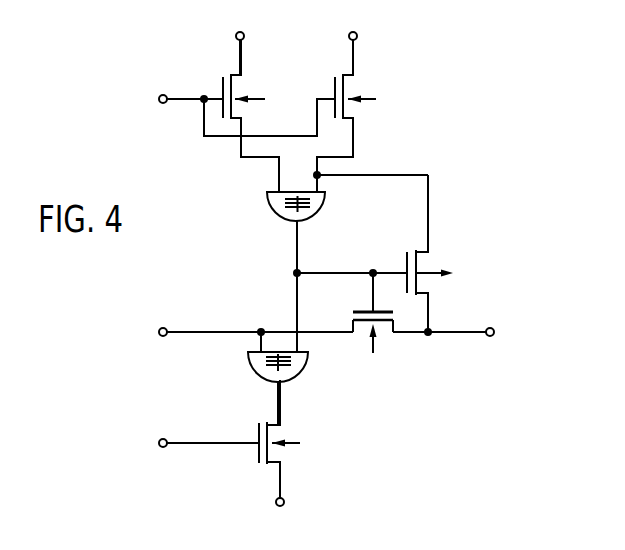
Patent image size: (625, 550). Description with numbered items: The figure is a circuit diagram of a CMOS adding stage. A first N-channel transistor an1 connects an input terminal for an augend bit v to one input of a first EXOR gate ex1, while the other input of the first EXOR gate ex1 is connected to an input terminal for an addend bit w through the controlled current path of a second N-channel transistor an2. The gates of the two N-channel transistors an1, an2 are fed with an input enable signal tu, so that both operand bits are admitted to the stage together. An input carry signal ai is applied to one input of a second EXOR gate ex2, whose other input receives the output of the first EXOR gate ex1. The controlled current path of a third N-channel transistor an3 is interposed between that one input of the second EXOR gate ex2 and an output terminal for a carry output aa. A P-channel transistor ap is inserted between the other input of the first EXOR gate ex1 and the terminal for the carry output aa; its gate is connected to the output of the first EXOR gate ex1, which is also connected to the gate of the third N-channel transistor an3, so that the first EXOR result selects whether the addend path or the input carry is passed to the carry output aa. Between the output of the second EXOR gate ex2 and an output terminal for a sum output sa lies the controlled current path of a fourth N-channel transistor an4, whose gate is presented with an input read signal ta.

The first N-channel transistor an1 is at (251, 116).
The second N-channel transistor an2 is at (355, 116).
The third N-channel transistor an3 is at (383, 318).
The fourth N-channel transistor an4 is at (294, 439).
The P-channel transistor ap is at (435, 253).
The first EXOR gate ex1 is at (322, 206).
The second EXOR gate ex2 is at (305, 368).
The augend bit v is at (240, 41).
The addend bit w is at (353, 41).
The input enable signal tu is at (226, 111).
The input read signal ta is at (191, 443).
The input carry signal ai is at (243, 331).
The carry output aa is at (460, 332).
The sum output sa is at (280, 517).